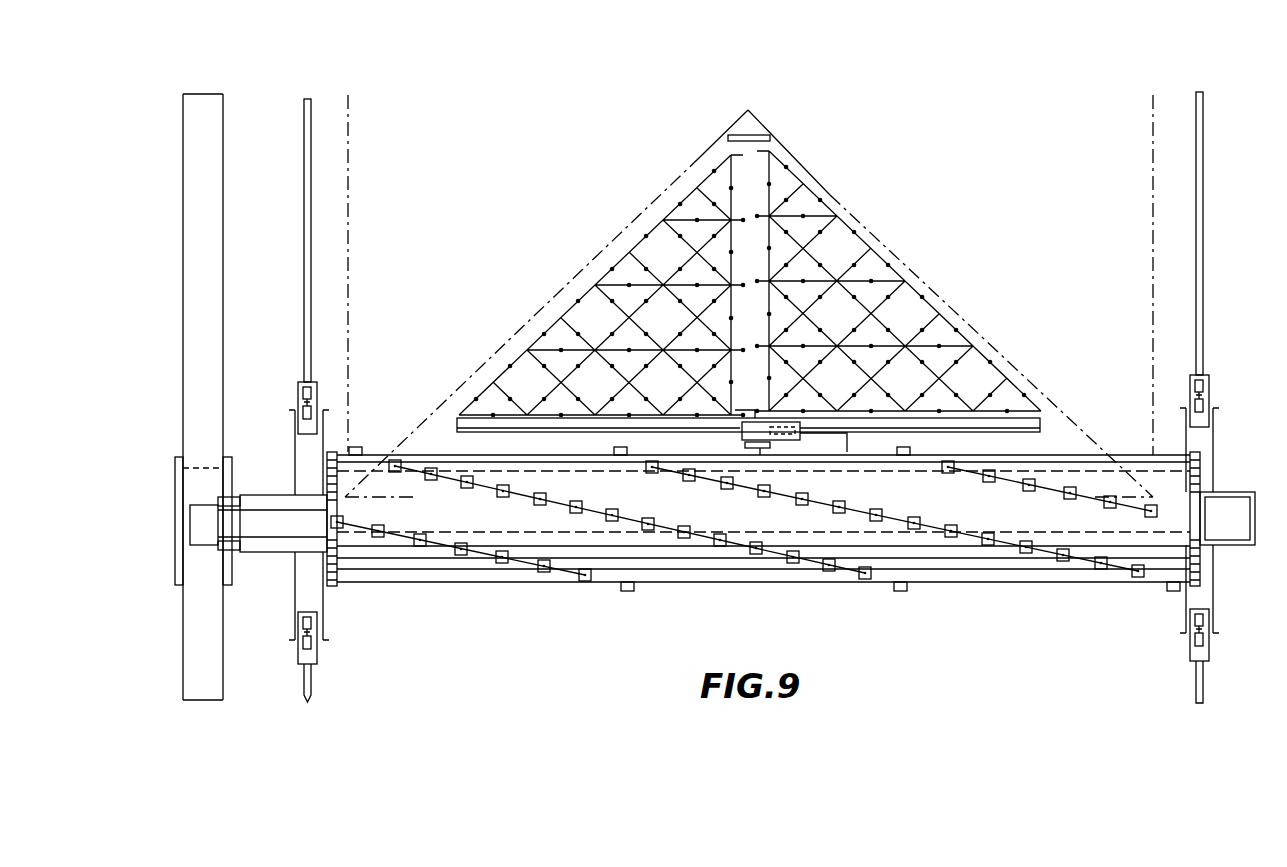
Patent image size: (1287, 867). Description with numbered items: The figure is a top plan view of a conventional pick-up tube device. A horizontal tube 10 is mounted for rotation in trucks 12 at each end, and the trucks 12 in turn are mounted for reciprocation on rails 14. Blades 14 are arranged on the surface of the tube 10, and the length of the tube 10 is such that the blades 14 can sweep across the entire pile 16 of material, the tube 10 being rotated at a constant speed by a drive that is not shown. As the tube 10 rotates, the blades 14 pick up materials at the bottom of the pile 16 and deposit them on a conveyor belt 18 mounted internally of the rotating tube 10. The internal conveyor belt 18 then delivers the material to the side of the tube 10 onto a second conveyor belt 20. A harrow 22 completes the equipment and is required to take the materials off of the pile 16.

The horizontal tube 10 is at (448, 584).
The trucks 12 is at (300, 453).
The blades 14 is at (305, 290).
The pile 16 is at (1036, 313).
The conveyor belt 18 is at (277, 528).
The conveyor belt 20 is at (190, 297).
The harrow 22 is at (1015, 414).